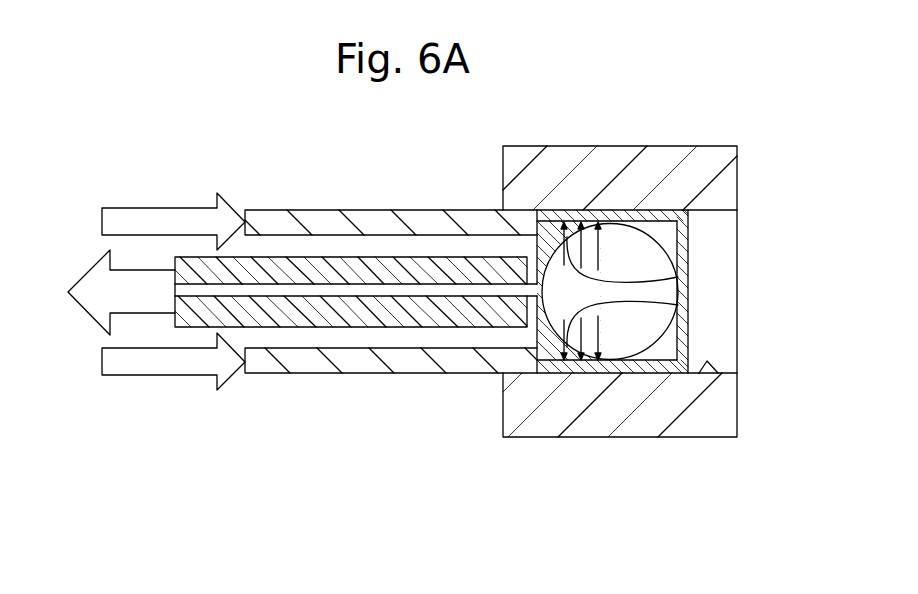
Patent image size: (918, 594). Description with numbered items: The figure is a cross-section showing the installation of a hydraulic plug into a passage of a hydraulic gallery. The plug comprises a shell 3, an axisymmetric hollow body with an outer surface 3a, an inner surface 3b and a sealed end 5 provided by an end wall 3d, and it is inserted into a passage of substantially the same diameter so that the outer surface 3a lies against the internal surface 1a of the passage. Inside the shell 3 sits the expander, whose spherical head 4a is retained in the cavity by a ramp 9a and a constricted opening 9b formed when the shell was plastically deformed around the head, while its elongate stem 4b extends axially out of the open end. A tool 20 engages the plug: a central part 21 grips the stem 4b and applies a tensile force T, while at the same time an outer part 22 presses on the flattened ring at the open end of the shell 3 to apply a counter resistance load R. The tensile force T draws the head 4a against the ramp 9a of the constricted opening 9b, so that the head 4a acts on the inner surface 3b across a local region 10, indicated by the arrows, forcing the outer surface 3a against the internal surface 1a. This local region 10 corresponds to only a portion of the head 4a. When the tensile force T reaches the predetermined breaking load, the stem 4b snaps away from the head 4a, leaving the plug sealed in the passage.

The internal surface of the passage 1a is at (707, 361).
The shell 3 is at (627, 374).
The outer surface of the shell 3a is at (628, 210).
The inner surface of the shell 3b is at (667, 224).
The end wall 3d is at (744, 342).
The sealed end 5 is at (754, 370).
The spherical head 4a is at (645, 312).
The elongate stem 4b is at (433, 290).
The ramp 9a is at (678, 277).
The constricted opening 9b is at (678, 305).
The local region 10 is at (604, 210).
The tool 20 is at (159, 375).
The central part 21 is at (417, 318).
The outer part 22 is at (308, 212).